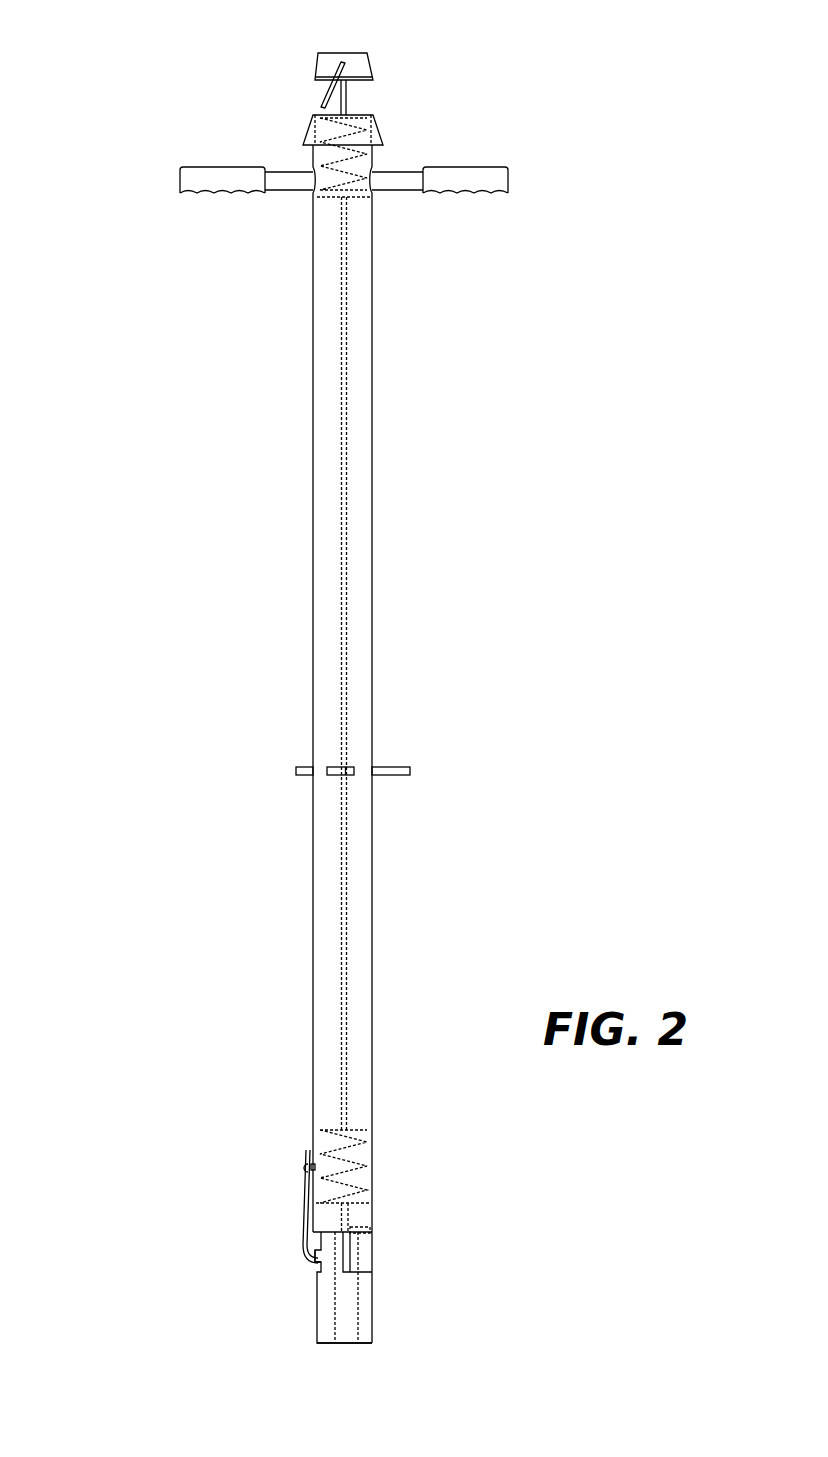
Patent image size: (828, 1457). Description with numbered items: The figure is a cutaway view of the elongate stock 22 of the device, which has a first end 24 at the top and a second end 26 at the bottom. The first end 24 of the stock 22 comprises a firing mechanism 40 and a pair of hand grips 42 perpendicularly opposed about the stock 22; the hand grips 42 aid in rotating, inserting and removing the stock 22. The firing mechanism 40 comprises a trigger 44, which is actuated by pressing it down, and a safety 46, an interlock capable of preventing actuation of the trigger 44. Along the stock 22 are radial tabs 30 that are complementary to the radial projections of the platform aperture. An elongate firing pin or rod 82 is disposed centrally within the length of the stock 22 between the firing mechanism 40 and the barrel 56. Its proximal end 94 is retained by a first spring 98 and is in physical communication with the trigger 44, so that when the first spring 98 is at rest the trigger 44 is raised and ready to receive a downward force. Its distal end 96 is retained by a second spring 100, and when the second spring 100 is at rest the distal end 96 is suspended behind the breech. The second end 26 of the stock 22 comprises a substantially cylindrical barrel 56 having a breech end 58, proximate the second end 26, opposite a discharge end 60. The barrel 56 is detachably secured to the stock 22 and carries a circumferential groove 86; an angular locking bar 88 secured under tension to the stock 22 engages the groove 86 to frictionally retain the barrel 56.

The stock 22 is at (168, 1008).
The firing mechanism 40 is at (264, 95).
The trigger 44 is at (367, 62).
The proximal end 94 is at (350, 79).
The safety 46 is at (323, 93).
The first end 24 is at (373, 118).
The first spring 98 is at (337, 157).
The hand grip 42 is at (230, 188).
The firing pin 82 is at (347, 497).
The radial tabs 30 is at (408, 770).
The second spring 100 is at (320, 1132).
The distal end 96 is at (350, 1218).
The second end 26 is at (373, 1232).
The breech end 58 is at (373, 1243).
The barrel 56 is at (373, 1325).
The discharge end 60 is at (372, 1345).
The circumferential groove 86 is at (318, 1270).
The angular locking bar 88 is at (305, 1236).